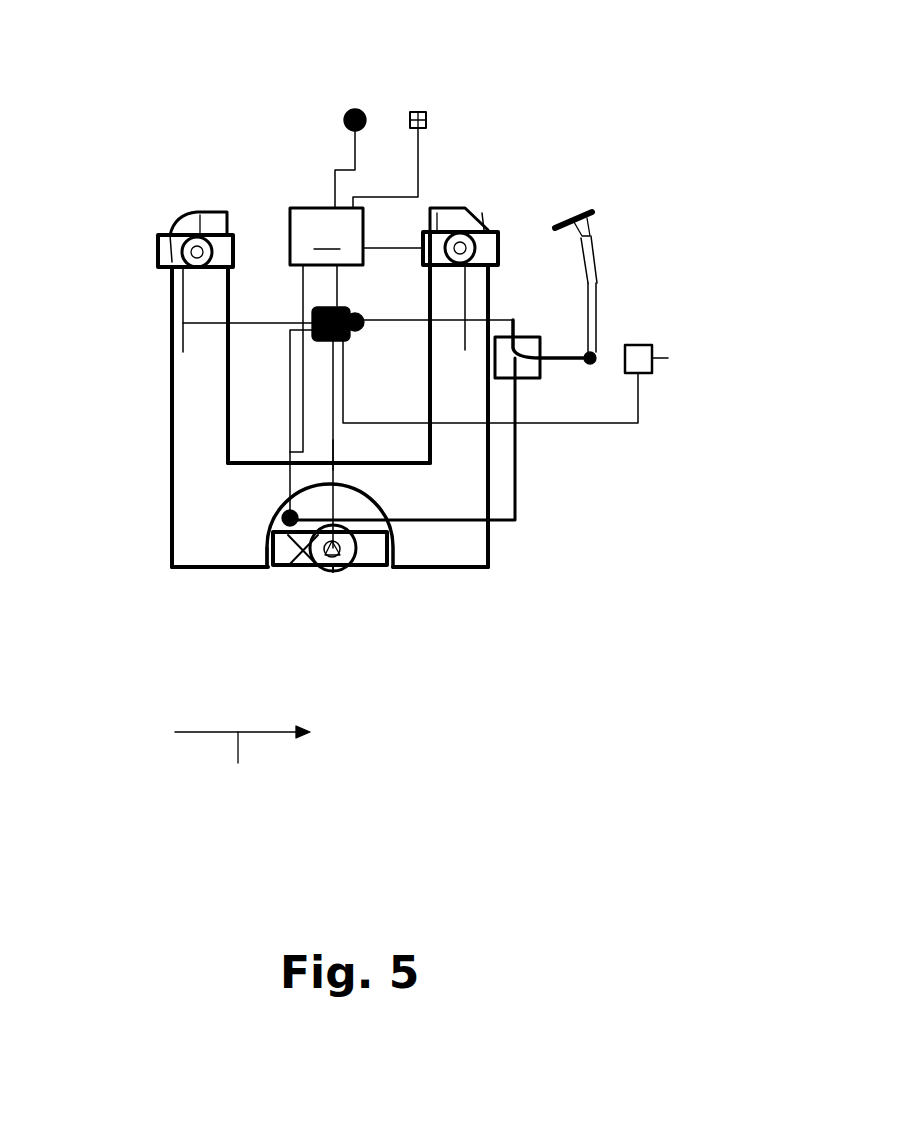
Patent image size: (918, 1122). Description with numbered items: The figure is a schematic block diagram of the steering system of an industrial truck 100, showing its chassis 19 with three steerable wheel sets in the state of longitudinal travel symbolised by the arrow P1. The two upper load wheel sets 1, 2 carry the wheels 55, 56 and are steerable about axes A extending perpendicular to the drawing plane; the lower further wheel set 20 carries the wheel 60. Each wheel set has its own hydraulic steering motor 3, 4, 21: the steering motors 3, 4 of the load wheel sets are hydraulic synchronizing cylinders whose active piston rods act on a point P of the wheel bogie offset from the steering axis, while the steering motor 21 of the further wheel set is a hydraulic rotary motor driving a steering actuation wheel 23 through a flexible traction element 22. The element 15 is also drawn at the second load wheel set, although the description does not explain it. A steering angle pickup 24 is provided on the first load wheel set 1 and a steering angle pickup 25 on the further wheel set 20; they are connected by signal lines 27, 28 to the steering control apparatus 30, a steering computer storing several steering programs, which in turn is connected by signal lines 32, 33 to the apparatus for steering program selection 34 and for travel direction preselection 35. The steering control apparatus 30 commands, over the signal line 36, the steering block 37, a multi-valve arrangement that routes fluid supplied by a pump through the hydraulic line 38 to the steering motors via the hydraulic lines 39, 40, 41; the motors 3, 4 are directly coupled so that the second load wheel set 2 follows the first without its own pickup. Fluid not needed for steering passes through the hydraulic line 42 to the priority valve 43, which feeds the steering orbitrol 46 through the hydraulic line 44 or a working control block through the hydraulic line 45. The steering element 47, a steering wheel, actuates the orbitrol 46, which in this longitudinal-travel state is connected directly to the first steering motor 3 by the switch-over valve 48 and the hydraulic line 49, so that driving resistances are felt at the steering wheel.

The industrial truck 100 is at (118, 98).
The load wheel set 1 is at (488, 230).
The load wheel set 2 is at (156, 248).
The hydraulic steering motor 3 is at (467, 287).
The hydraulic steering motor 4 is at (180, 297).
The piston 15 is at (160, 267).
The chassis 19 is at (470, 570).
The further wheel set 20 is at (378, 569).
The hydraulic steering motor 21 is at (250, 569).
The flexible traction element 22 is at (290, 569).
The steering actuation wheel 23 is at (347, 570).
The steering angle pickup 24 is at (478, 208).
The steering angle pickup 25 is at (325, 570).
The signal line 27 is at (398, 252).
The signal line 28 is at (334, 457).
The steering control apparatus 30 is at (326, 236).
The signal line 32 is at (356, 150).
The signal line 33 is at (419, 153).
The apparatus for steering program selection 34 is at (358, 110).
The apparatus for travel direction preselection 35 is at (422, 112).
The signal line 36 is at (345, 292).
The steering block 37 is at (328, 343).
The hydraulic line 38 is at (330, 410).
The hydraulic line 39 is at (403, 321).
The hydraulic line 40 is at (289, 412).
The hydraulic line 41 is at (258, 326).
The hydraulic line 42 is at (463, 422).
The priority valve 43 is at (638, 345).
The hydraulic line 44 is at (613, 357).
The hydraulic line 45 is at (668, 358).
The steering orbitrol 46 is at (596, 366).
The steering element 47 is at (602, 214).
The switch-over valve 48 is at (535, 378).
The hydraulic line 49 is at (515, 337).
The wheel 55 is at (441, 203).
The wheel 56 is at (234, 224).
The wheel 60 is at (418, 569).
The steering axis A is at (462, 230).
The point on the wheel bogie P is at (482, 213).
The arrow P1 is at (170, 233).